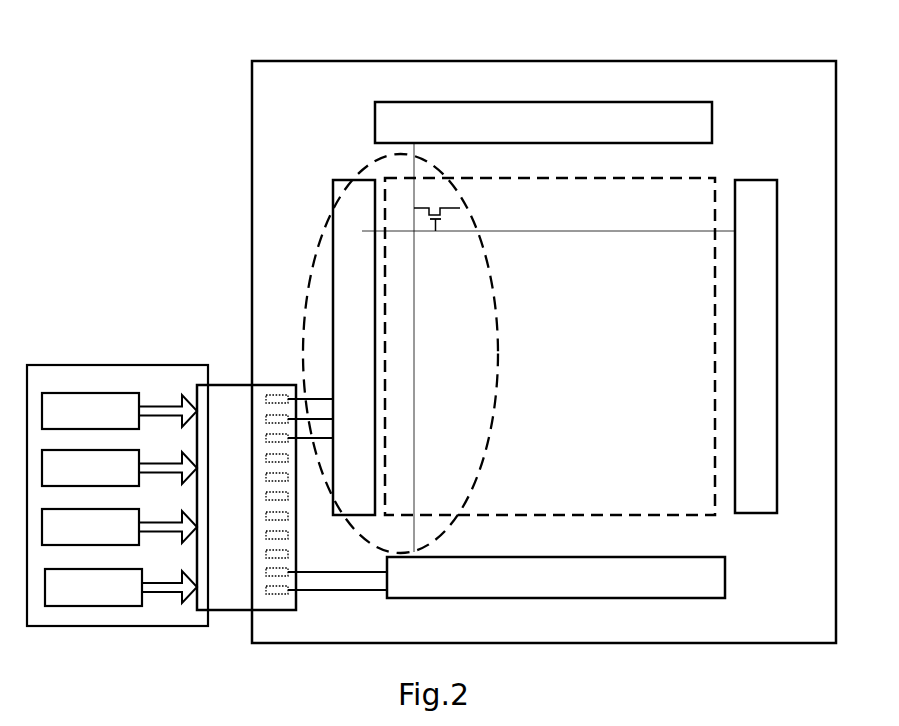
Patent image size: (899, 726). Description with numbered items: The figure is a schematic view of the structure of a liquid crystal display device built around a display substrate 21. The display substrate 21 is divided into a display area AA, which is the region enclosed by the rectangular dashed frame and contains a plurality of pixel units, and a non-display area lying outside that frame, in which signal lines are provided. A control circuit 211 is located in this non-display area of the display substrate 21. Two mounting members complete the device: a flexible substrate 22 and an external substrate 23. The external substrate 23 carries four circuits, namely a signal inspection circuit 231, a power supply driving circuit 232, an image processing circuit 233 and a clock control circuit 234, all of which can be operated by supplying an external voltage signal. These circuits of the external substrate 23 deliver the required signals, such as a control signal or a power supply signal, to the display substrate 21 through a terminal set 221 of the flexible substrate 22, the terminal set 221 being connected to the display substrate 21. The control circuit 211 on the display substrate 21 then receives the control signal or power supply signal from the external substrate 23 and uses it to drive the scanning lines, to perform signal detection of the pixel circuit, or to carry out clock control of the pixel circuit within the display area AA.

The display substrate 21 is at (569, 61).
The control circuit 211 is at (632, 102).
The display area AA is at (690, 178).
The flexible substrate 22 is at (232, 385).
The terminal set 221 is at (276, 593).
The external substrate 23 is at (88, 363).
The signal inspection circuit 231 is at (119, 411).
The power supply driving circuit 232 is at (119, 468).
The image processing circuit 233 is at (119, 527).
The clock control circuit 234 is at (121, 587).